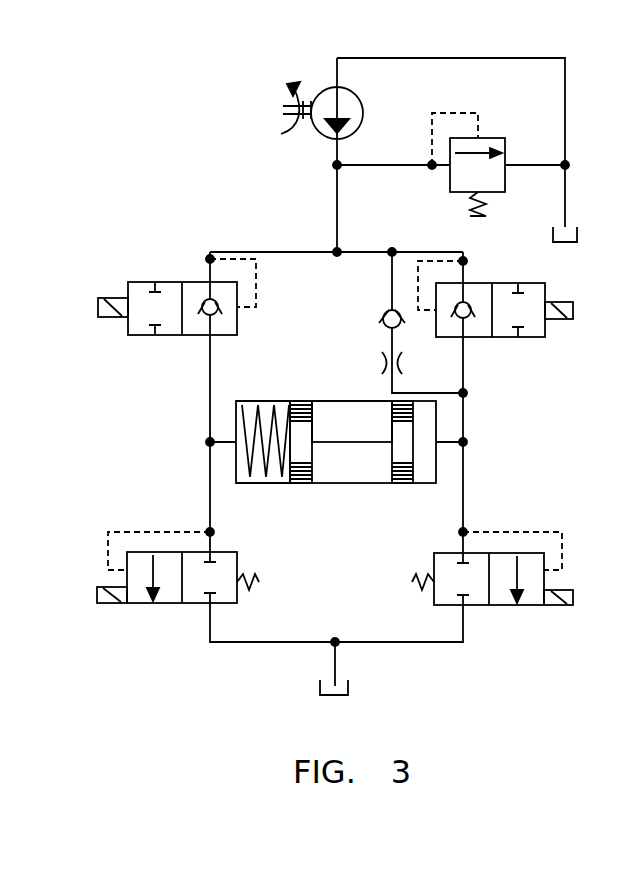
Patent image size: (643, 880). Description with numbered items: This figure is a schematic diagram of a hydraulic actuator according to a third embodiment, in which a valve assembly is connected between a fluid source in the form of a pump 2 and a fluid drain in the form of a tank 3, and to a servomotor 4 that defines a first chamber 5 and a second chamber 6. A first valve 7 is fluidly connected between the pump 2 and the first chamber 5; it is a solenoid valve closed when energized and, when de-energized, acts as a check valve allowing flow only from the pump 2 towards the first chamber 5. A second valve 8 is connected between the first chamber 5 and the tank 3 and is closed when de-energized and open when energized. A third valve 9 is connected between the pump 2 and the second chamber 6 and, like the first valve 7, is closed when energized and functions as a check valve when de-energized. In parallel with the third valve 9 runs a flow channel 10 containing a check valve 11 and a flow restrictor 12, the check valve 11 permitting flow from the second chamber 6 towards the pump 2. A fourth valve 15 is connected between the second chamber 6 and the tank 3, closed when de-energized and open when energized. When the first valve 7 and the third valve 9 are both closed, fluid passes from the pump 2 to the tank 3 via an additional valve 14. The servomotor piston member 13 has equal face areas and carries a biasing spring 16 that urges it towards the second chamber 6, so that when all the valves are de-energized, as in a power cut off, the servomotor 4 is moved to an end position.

The pump 2 is at (322, 92).
The tank 3 is at (577, 234).
The servomotor 4 is at (359, 441).
The first chamber 5 is at (260, 474).
The second chamber 6 is at (428, 450).
The first valve 7 is at (170, 281).
The second valve 8 is at (126, 578).
The third valve 9 is at (510, 337).
The flow channel 10 is at (392, 283).
The check valve 11 is at (382, 325).
The flow restrictor 12 is at (385, 366).
The servomotor piston member 13 is at (345, 444).
The additional valve 14 is at (510, 122).
The fourth valve 15 is at (497, 605).
The biasing spring 16 is at (257, 402).